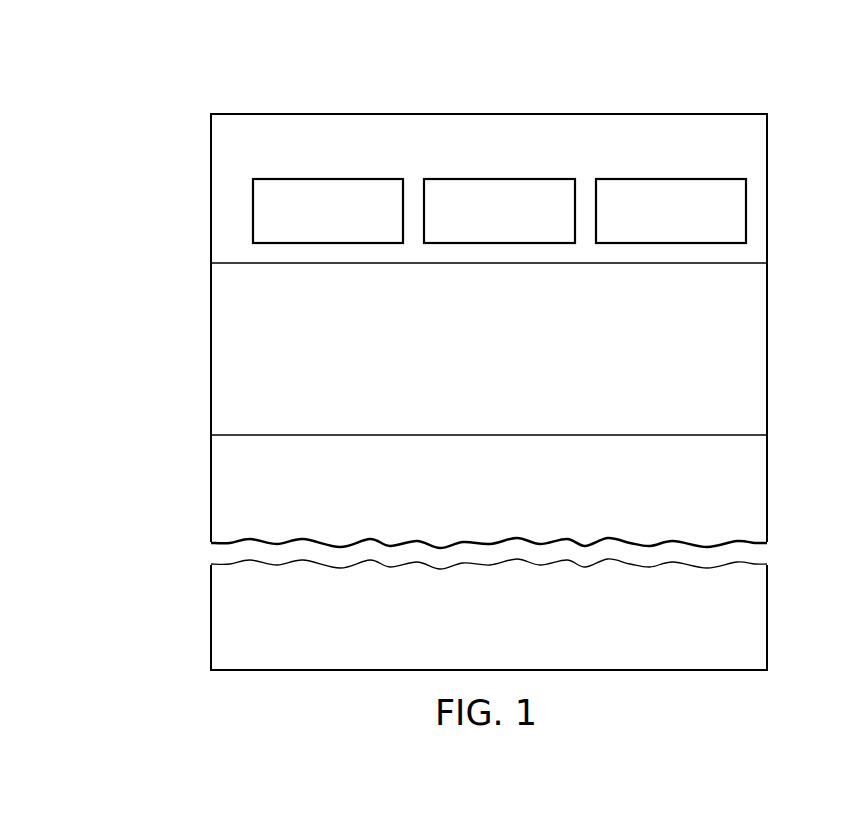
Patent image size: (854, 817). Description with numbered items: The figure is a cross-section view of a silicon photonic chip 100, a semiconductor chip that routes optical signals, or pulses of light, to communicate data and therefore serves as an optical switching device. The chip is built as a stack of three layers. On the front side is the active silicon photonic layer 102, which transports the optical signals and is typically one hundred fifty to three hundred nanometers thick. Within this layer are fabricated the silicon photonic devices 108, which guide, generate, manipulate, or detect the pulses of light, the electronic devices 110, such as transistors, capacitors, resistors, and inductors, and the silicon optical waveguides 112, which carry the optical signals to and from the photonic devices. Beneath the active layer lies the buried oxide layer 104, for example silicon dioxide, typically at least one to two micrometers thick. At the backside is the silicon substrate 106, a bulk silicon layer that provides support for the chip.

The silicon photonic chip 100 is at (338, 114).
The active silicon photonic layer 102 is at (422, 199).
The buried oxide layer 104 is at (408, 349).
The silicon substrate 106 is at (415, 553).
The silicon photonic devices 108 is at (500, 178).
The electronic devices 110 is at (327, 178).
The silicon optical waveguides 112 is at (671, 178).